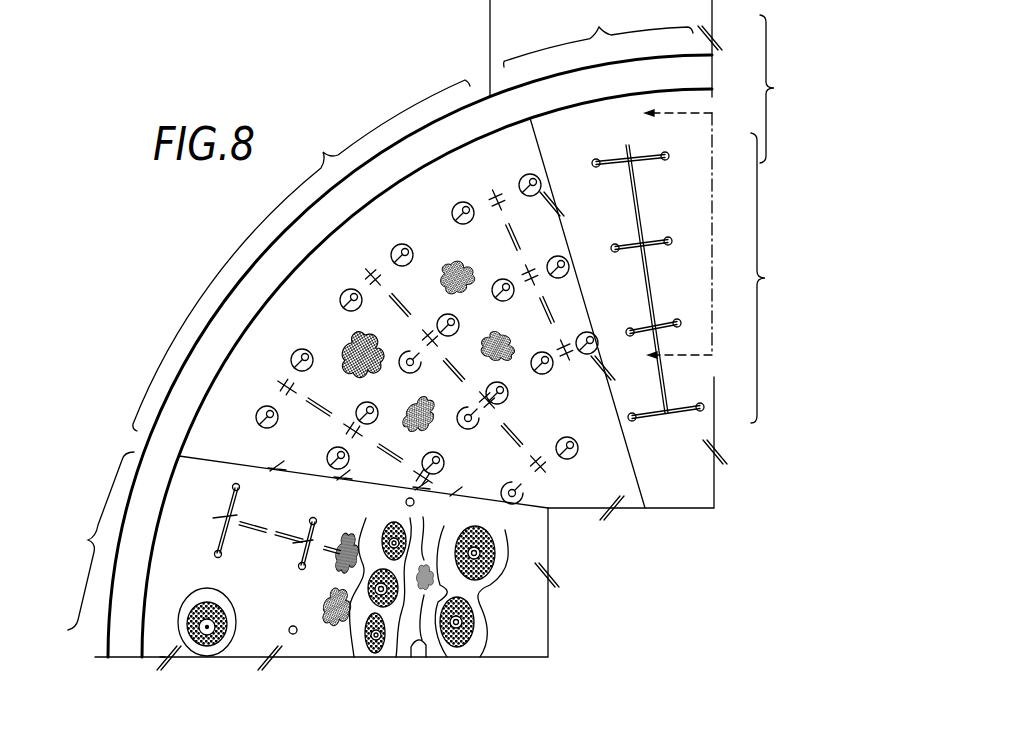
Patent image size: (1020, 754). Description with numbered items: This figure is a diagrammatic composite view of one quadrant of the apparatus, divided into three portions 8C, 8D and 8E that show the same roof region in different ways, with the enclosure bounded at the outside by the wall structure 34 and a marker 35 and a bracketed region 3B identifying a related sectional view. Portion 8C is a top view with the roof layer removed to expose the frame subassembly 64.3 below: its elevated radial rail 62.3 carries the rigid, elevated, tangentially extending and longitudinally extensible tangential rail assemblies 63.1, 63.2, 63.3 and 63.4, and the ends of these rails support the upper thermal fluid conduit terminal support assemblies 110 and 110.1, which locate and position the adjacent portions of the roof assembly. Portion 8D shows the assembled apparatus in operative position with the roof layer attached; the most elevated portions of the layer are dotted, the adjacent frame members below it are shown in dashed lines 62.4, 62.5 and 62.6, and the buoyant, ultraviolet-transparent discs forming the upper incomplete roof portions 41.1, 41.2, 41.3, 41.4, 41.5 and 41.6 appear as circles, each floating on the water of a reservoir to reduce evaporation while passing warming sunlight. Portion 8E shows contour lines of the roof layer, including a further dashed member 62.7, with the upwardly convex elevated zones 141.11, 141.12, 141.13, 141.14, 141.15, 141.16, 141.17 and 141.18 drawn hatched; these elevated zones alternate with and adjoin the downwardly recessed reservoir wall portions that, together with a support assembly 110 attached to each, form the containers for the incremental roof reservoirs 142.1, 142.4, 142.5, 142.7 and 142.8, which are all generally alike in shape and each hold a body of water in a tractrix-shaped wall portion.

The wall structure 34 is at (128, 665).
The ring flange 35 is at (489, 27).
The section view 3B region 3B is at (779, 89).
The portion 8C is at (598, 38).
The portion 8D is at (301, 255).
The portion 8E is at (99, 541).
The upper thermal fluid conduit terminal support assembly 110 is at (665, 156).
The upper thermal fluid conduit terminal support assembly 110.1 is at (594, 160).
The radial rail 62.3 is at (638, 201).
The marking line 62.4 is at (534, 275).
The marking line 62.5 is at (447, 366).
The marking line 62.6 is at (408, 463).
The marking line 62.7 is at (305, 549).
The tangential rail assembly 63.1 is at (700, 404).
The tangential rail assembly 63.2 is at (655, 330).
The tangential rail assembly 63.3 is at (651, 243).
The tangential rail assembly 63.4 is at (637, 158).
The frame subassembly 64.3 is at (775, 278).
The upper incomplete portion 41.1 is at (524, 173).
The upper incomplete portion 41.2 is at (555, 255).
The upper incomplete portion 41.3 is at (580, 354).
The upper incomplete portion 41.4 is at (447, 314).
The upper incomplete portion 41.5 is at (500, 404).
The upper incomplete portion 41.6 is at (561, 458).
The upwardly convex elevated zone 141.11 is at (360, 337).
The upwardly convex elevated zone 141.12 is at (467, 258).
The upwardly convex elevated zone 141.13 is at (488, 332).
The upwardly convex elevated zone 141.14 is at (424, 428).
The upwardly convex elevated zone 141.15 is at (346, 538).
The upwardly convex elevated zone 141.16 is at (333, 627).
The upwardly convex elevated zone 141.17 is at (418, 650).
The upwardly convex elevated zone 141.18 is at (425, 545).
The incremental roof reservoir 142.1 is at (457, 647).
The incremental roof reservoir 142.4 is at (388, 522).
The incremental roof reservoir 142.5 is at (356, 588).
The incremental roof reservoir 142.7 is at (373, 652).
The incremental roof reservoir 142.8 is at (220, 650).